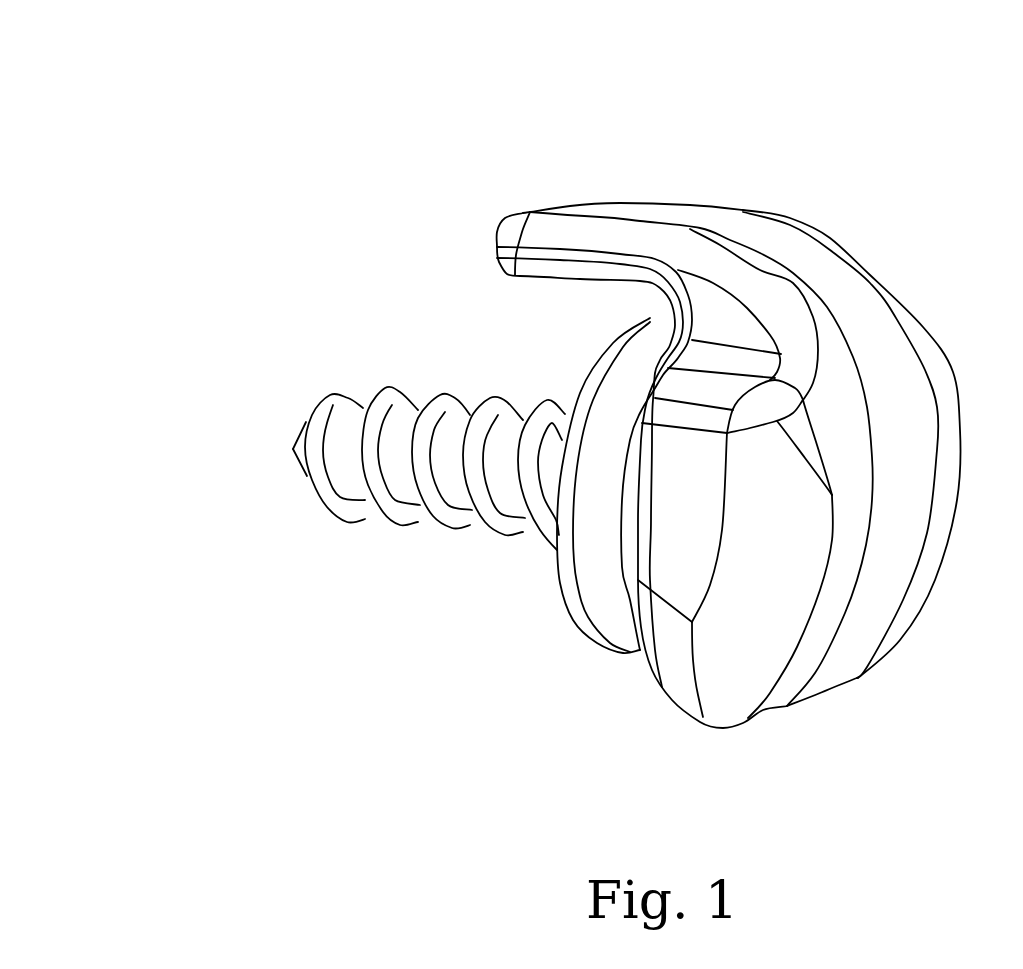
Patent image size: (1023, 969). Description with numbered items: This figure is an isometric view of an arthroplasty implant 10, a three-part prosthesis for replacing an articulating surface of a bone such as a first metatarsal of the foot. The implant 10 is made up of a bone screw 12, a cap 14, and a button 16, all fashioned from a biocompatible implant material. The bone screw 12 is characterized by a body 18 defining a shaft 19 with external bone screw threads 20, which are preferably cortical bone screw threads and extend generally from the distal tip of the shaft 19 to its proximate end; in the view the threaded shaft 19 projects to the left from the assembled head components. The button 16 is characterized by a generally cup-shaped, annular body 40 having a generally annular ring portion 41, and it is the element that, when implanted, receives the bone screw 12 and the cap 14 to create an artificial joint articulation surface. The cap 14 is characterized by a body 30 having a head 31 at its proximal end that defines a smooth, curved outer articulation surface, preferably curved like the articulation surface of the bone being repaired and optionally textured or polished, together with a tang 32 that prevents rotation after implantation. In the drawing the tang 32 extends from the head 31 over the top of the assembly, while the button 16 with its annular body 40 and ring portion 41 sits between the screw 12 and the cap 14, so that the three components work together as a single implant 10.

The arthroplasty implant 10 is at (253, 112).
The bone screw 12 is at (322, 546).
The cap 14 is at (646, 723).
The button 16 is at (582, 666).
The body 18 is at (305, 477).
The shaft 19 is at (343, 430).
The external bone screw threads 20 is at (402, 523).
The body 30 is at (787, 711).
The head 31 is at (917, 457).
The tang 32 is at (557, 232).
The annular body 40 is at (556, 570).
The annular ring portion 41 is at (620, 378).